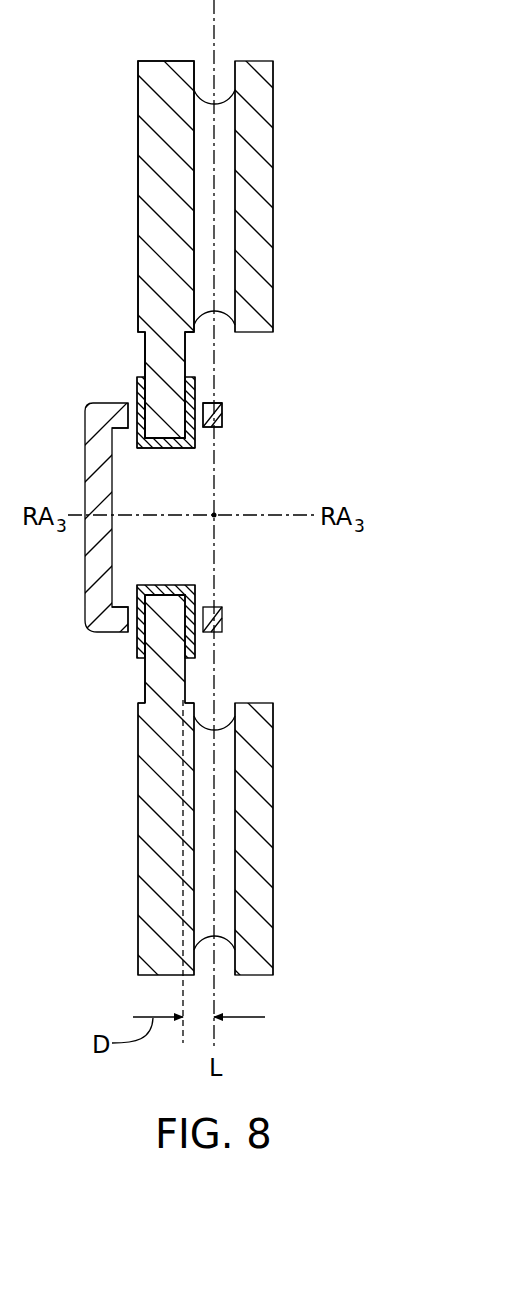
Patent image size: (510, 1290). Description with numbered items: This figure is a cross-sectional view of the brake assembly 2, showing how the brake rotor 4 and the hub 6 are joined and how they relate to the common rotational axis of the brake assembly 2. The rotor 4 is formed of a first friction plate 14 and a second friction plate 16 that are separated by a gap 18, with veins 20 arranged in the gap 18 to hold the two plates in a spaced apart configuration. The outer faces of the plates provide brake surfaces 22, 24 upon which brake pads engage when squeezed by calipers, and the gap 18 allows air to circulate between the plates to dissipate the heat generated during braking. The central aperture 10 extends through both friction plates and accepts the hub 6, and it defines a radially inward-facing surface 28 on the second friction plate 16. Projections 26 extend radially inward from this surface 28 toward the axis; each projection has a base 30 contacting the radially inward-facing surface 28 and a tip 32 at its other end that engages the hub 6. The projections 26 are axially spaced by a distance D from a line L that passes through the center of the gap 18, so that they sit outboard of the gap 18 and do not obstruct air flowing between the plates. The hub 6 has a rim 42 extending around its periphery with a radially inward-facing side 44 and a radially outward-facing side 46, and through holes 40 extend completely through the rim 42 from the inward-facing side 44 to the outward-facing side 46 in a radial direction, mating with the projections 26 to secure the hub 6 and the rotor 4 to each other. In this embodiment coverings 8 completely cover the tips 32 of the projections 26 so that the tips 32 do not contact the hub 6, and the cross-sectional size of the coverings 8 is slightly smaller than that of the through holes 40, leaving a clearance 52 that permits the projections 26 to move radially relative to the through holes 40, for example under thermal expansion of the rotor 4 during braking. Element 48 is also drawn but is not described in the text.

The brake assembly 2 is at (50, 94).
The brake rotor 4 is at (258, 128).
The hub 6 is at (97, 470).
The coverings 8 is at (192, 378).
The central aperture 10 is at (312, 437).
The first friction plate 14 is at (258, 300).
The second friction plate 16 is at (162, 232).
The gap 18 is at (221, 128).
The veins 20 is at (223, 222).
The brake surface 22 is at (276, 173).
The brake surface 24 is at (137, 140).
The projections 26 is at (160, 335).
The radially inward-facing surface 28 is at (144, 336).
The base 30 is at (162, 693).
The tip 32 is at (158, 601).
The through holes 40 is at (135, 402).
The rim 42 is at (98, 411).
The radially inward-facing side 44 is at (223, 434).
The radially outward-facing side 46 is at (223, 397).
The sealing ring 48 is at (224, 418).
The clearance 52 is at (132, 450).